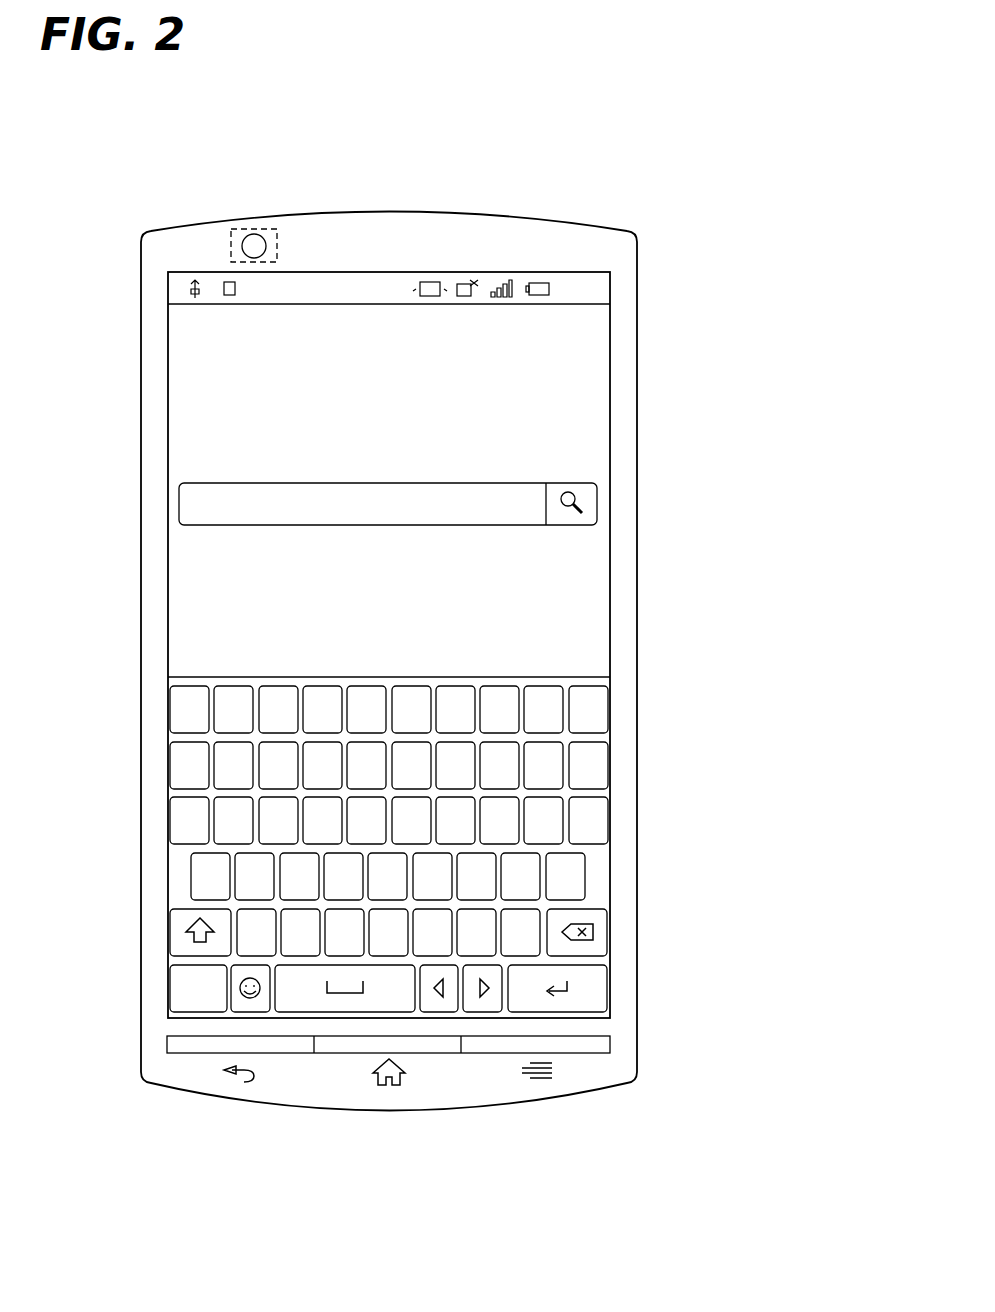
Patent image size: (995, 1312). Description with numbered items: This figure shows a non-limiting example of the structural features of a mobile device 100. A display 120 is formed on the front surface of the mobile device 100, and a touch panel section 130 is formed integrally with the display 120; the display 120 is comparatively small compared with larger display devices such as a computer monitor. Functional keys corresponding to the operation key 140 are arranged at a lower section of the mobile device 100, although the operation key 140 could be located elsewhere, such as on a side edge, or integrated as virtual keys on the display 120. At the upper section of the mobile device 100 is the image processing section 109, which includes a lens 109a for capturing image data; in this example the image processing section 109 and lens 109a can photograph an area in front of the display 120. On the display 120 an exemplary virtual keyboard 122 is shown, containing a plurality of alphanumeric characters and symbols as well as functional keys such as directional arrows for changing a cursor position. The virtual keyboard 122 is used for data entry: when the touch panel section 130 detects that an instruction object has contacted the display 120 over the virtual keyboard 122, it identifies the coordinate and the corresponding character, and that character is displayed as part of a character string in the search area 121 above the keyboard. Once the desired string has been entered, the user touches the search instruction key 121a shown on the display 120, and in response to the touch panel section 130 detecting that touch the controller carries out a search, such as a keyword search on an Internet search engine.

The mobile device 100 is at (596, 225).
The image processing section 109 is at (263, 229).
The lens 109a is at (253, 234).
The display 120 is at (483, 645).
The touch panel section 130 is at (610, 397).
The search area 121 is at (392, 566).
The search instruction key 121a is at (568, 520).
The virtual keyboard 122 is at (228, 676).
The operation key 140 is at (502, 1048).